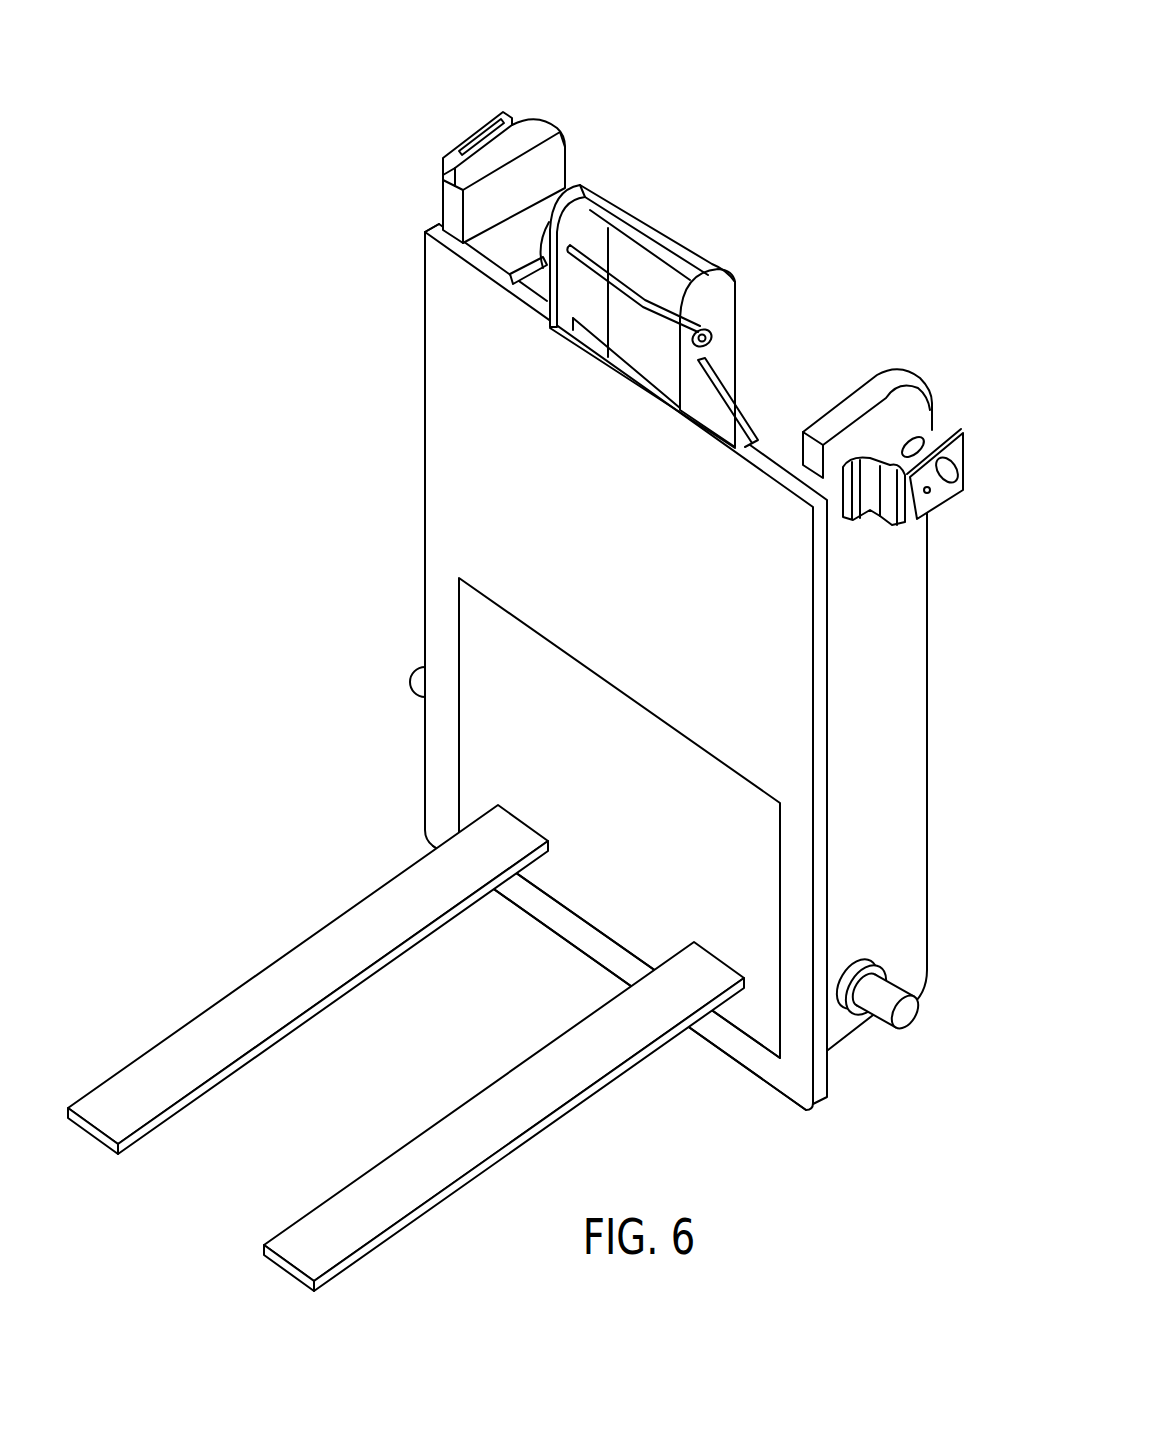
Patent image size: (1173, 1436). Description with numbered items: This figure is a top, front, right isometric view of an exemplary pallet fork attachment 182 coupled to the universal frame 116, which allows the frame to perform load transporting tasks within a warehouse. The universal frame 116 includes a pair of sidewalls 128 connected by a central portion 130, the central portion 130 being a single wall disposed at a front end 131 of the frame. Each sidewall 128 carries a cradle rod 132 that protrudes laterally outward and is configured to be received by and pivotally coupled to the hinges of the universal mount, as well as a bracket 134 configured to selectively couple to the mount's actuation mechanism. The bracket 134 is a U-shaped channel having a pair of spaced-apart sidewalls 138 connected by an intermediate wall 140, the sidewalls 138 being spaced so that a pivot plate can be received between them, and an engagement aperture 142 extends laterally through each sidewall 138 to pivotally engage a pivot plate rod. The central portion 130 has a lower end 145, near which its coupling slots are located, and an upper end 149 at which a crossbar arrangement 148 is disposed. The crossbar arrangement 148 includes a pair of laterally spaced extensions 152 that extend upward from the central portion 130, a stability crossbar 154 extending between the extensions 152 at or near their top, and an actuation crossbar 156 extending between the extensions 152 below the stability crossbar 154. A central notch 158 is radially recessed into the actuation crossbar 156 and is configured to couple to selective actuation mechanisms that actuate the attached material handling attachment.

The universal frame 116 is at (424, 130).
The sidewalls 128 is at (547, 130).
The central portion 130 is at (523, 517).
The front end 131 is at (543, 566).
The cradle rod 132 is at (418, 681).
The bracket 134 is at (475, 113).
The spaced-apart sidewalls 138 is at (497, 112).
The intermediate wall 140 is at (872, 458).
The engagement aperture 142 is at (948, 484).
The lower end 145 is at (538, 928).
The crossbar arrangement 148 is at (740, 367).
The upper end 149 is at (615, 372).
The extensions 152 is at (575, 185).
The stability crossbar 154 is at (643, 213).
The actuation crossbar 156 is at (697, 292).
The central notch 158 is at (630, 289).
The pallet fork attachment 182 is at (422, 798).